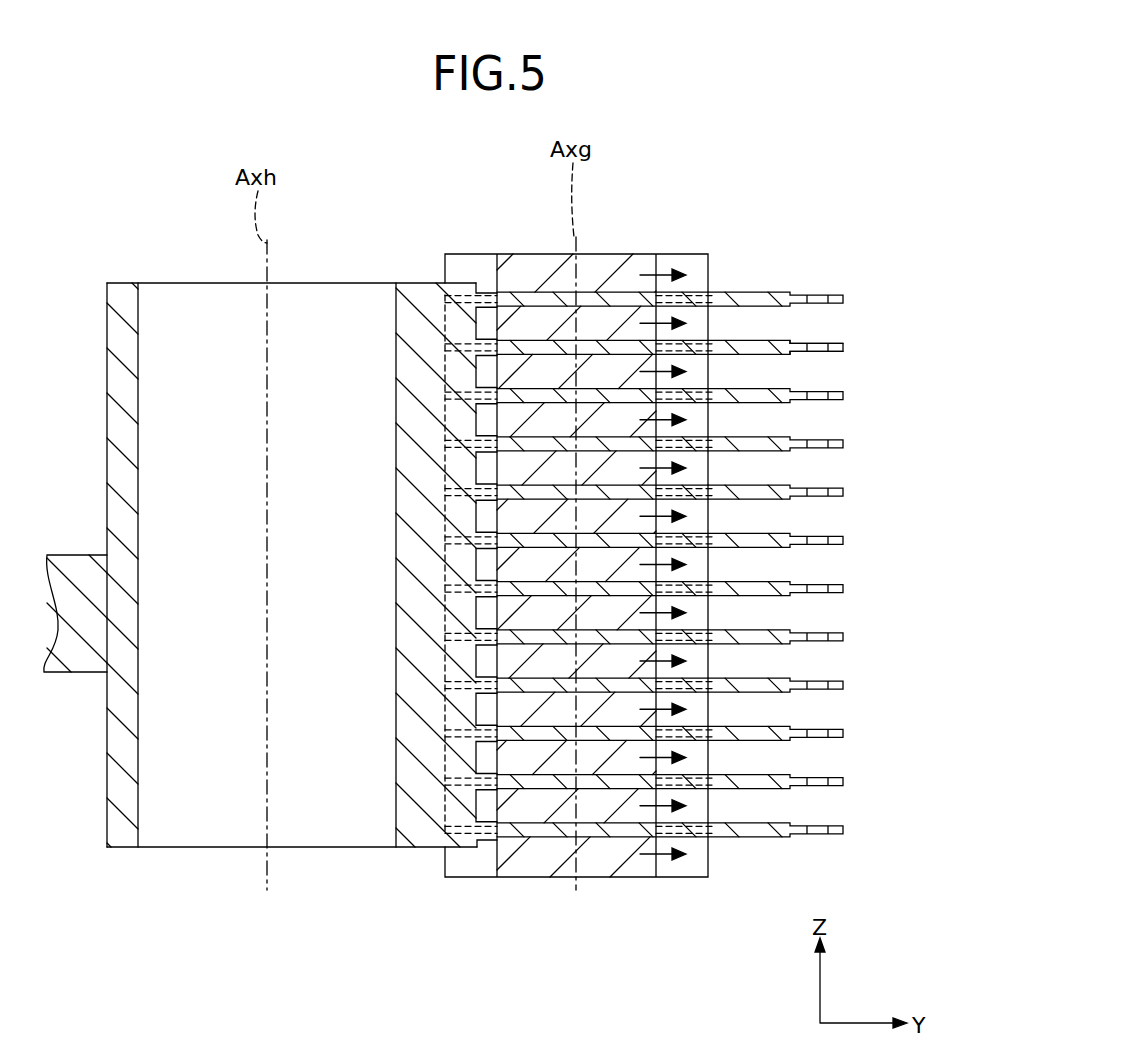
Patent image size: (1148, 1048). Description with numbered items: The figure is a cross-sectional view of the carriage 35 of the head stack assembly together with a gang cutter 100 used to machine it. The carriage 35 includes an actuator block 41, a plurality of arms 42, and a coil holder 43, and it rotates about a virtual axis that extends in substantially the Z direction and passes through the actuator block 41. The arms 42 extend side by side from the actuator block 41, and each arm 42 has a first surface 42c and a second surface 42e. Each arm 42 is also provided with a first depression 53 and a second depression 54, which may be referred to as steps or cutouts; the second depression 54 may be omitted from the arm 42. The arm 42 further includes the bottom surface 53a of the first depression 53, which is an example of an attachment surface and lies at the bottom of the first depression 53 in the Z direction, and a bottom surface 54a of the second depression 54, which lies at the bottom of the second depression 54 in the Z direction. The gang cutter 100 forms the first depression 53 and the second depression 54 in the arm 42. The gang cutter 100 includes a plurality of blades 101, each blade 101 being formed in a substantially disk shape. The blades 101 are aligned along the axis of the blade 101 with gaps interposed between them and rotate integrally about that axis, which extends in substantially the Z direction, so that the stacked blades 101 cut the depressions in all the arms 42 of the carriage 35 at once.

The carriage 35 is at (119, 280).
The actuator block 41 is at (130, 298).
The arm 42 is at (758, 346).
The first surface 42c is at (788, 340).
The second surface 42e is at (786, 358).
The coil holder 43 is at (74, 572).
The first depression 53 is at (592, 525).
The bottom surface of the first depression 53a is at (620, 340).
The second depression 54 is at (731, 564).
The bottom surface of the second depression 54a is at (612, 352).
The gang cutter 100 is at (471, 254).
The blade 101 is at (510, 365).